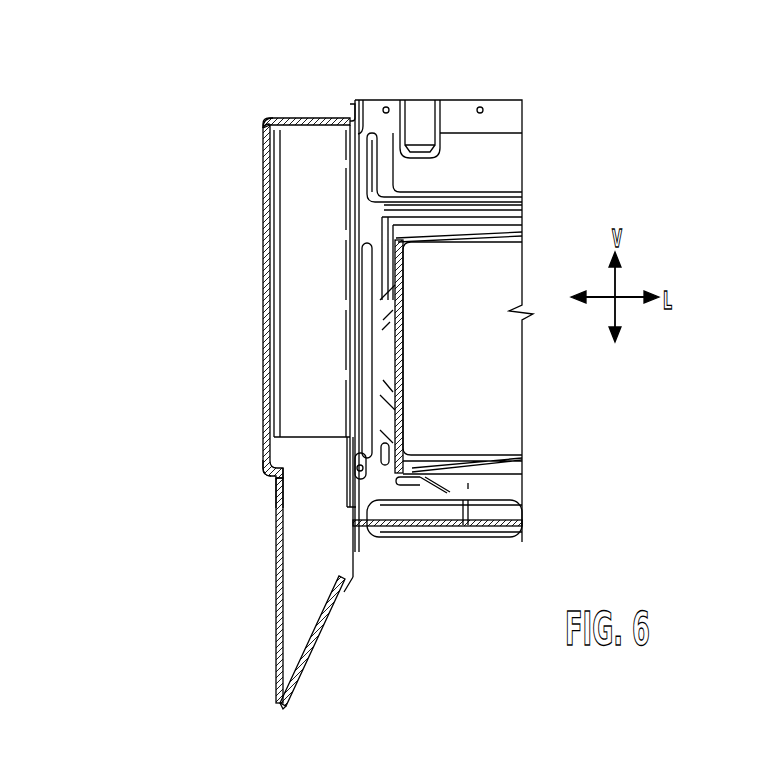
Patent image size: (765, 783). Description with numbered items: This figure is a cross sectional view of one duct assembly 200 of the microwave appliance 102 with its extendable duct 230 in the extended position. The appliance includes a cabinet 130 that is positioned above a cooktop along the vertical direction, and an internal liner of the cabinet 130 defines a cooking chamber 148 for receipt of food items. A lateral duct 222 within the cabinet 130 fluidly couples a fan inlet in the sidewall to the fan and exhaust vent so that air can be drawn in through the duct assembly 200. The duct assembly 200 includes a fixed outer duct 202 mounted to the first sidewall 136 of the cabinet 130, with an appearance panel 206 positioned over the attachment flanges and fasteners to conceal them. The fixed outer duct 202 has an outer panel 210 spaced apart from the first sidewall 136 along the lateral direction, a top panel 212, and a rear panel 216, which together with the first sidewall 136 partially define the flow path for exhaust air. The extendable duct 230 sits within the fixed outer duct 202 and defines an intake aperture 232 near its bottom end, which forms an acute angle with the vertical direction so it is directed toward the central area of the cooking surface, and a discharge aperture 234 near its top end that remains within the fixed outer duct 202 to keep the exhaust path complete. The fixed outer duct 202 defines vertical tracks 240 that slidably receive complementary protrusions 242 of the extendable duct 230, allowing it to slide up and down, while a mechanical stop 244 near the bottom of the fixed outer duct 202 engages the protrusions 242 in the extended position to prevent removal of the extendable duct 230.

The microwave appliance 102 is at (155, 208).
The cabinet 130 is at (497, 99).
The first sidewall 136 is at (362, 100).
The cooking chamber 148 is at (484, 390).
The duct assembly 200 is at (196, 374).
The fixed outer duct 202 is at (284, 112).
The appearance panel 206 is at (349, 107).
The outer panel 210 is at (266, 218).
The top panel 212 is at (307, 117).
The rear panel 216 is at (300, 178).
The lateral duct 222 is at (498, 157).
The extendable duct 230 is at (276, 588).
The intake aperture 232 is at (323, 651).
The discharge aperture 234 is at (304, 433).
The vertical track 240 is at (273, 265).
The complementary protrusion 242 is at (265, 446).
The mechanical stop 244 is at (260, 476).